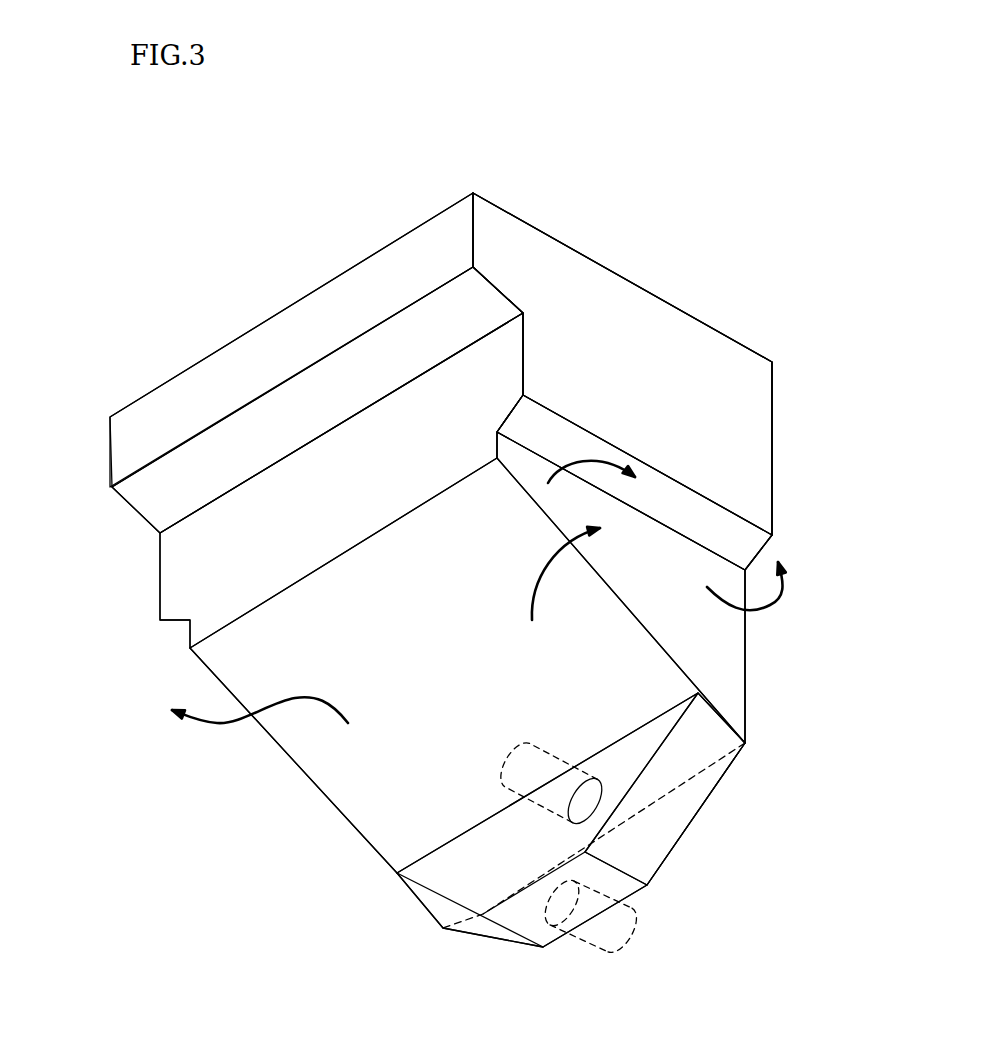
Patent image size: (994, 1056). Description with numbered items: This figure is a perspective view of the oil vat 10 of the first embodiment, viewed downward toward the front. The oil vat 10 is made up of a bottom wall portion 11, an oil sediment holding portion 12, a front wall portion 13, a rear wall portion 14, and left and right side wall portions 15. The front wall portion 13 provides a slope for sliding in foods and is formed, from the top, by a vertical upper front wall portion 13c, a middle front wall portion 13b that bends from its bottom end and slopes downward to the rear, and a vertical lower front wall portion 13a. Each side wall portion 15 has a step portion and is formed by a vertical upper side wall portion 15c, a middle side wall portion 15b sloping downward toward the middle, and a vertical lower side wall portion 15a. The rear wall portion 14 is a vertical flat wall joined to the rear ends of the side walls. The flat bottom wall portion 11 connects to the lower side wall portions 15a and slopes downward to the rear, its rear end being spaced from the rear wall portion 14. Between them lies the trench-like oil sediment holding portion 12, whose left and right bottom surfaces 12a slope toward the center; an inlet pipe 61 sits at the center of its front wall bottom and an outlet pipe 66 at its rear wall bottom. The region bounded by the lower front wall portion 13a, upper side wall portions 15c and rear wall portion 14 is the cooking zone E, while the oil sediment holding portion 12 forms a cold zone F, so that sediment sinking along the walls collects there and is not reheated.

The oil vat 10 is at (577, 227).
The bottom wall portion 11 is at (613, 687).
The oil sediment holding portion 12 is at (482, 848).
The bottom surfaces 12a is at (690, 790).
The front wall portion 13 is at (220, 375).
The lower front wall portion 13a is at (200, 577).
The middle front wall portion 13b is at (155, 500).
The upper front wall portion 13c is at (400, 265).
The rear wall portion 14 is at (748, 703).
The side wall portions 15 is at (667, 350).
The lower side wall portion 15a is at (720, 620).
The middle side wall portion 15b is at (737, 538).
The upper side wall portion 15c is at (743, 395).
The inlet pipe 61 is at (567, 747).
The outlet pipe 66 is at (570, 938).
The cooking zone E is at (690, 427).
The cold zone F is at (647, 840).